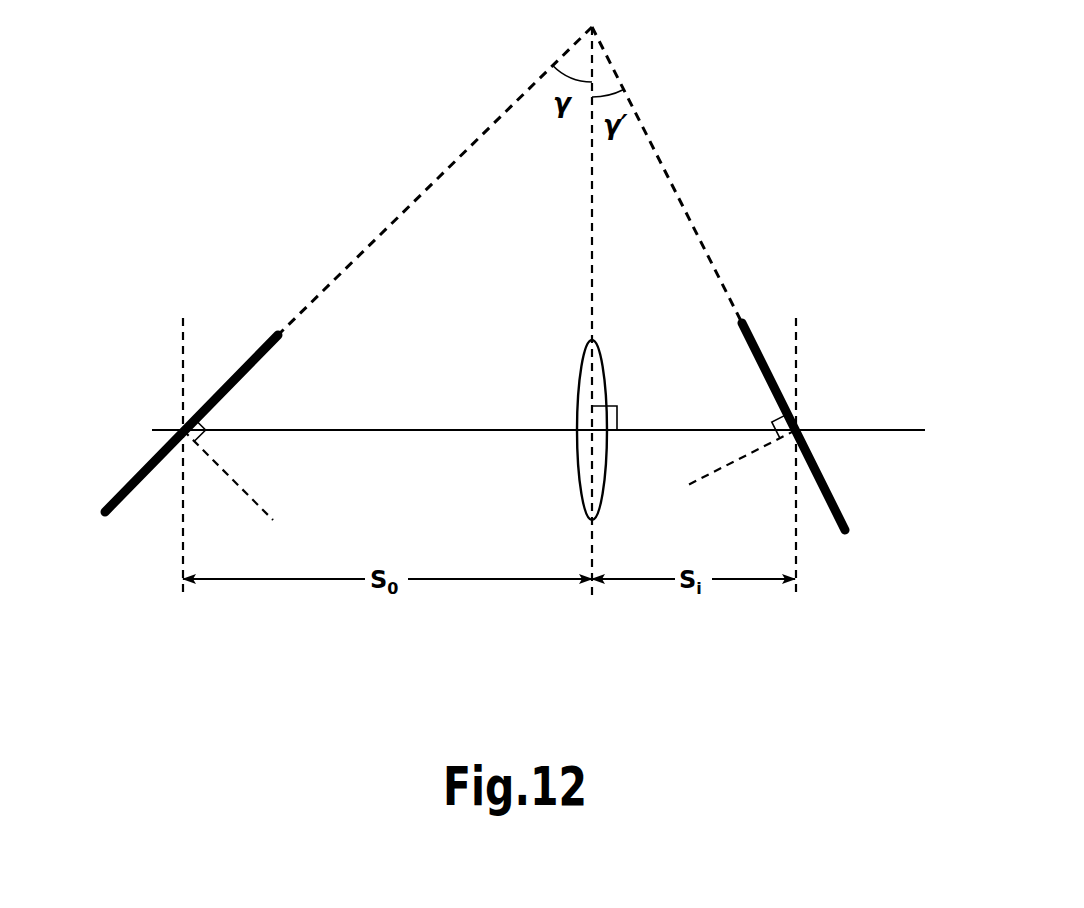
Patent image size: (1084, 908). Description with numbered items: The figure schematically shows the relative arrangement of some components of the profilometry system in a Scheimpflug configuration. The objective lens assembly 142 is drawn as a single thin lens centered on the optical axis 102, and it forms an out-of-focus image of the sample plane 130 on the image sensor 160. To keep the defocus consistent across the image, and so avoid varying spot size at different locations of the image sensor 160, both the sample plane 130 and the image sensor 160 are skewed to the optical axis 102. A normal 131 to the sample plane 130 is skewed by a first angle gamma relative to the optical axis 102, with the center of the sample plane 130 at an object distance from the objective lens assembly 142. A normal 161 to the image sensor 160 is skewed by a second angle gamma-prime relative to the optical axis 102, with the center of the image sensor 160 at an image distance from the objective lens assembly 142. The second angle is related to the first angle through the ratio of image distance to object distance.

The optical axis 102 is at (870, 430).
The sample plane 130 is at (127, 486).
The normal to the sample plane 131 is at (265, 504).
The objective lens assembly 142 is at (580, 358).
The image sensor 160 is at (836, 503).
The normal to the plane of the image sensor 161 is at (726, 466).